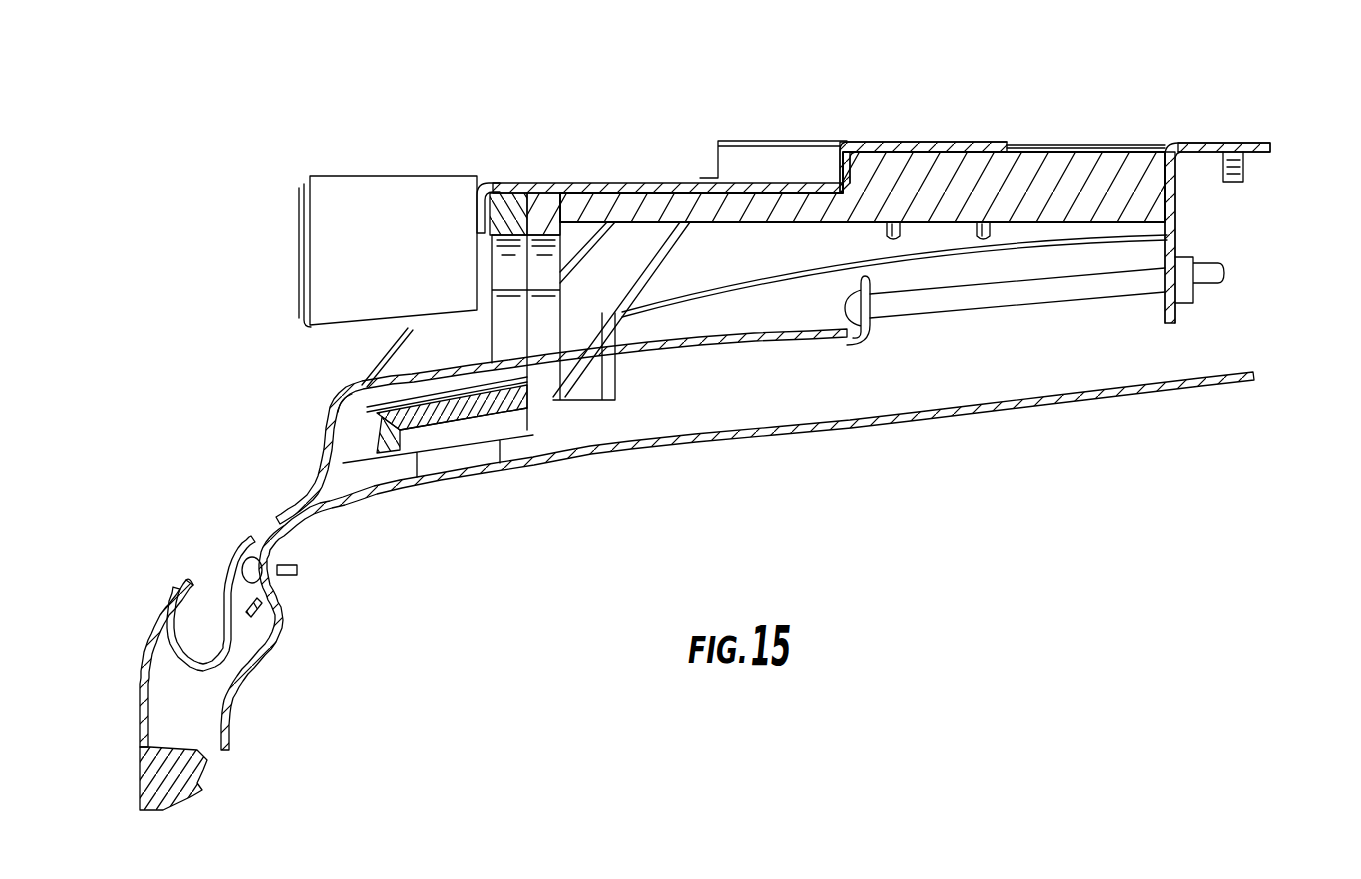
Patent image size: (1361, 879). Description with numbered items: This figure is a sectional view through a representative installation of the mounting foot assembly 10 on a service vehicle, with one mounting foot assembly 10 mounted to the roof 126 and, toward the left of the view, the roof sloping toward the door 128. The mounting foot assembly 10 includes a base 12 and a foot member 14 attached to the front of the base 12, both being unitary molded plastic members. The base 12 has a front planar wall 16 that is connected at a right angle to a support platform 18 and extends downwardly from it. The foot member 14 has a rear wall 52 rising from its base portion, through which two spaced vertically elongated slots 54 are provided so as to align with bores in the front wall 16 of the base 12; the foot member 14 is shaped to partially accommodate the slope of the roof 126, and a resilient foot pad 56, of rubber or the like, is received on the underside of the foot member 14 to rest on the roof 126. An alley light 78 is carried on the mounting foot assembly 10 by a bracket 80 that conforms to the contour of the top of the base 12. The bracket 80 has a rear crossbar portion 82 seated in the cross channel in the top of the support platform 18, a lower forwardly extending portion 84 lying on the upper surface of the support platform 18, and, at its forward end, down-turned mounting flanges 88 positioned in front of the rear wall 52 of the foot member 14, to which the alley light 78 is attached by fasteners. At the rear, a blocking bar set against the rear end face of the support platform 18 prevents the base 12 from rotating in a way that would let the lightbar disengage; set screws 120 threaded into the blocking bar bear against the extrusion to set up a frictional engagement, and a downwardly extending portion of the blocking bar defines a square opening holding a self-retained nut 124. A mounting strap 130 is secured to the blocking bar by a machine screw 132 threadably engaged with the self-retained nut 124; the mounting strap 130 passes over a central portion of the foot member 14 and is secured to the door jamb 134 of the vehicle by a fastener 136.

The mounting foot assembly 10 is at (785, 107).
The base 12 is at (1086, 106).
The foot member 14 is at (519, 453).
The front planar wall 16 is at (860, 321).
The support platform 18 is at (862, 174).
The rear wall 52 is at (506, 146).
The vertically elongated slots 54 is at (302, 431).
The foot pad 56 is at (455, 487).
The alley light 78 is at (388, 249).
The bracket 80 is at (553, 259).
The rear crossbar portion 82 is at (923, 130).
The lower forwardly extending portion 84 is at (668, 151).
The mounting flanges 88 is at (478, 163).
The set screws 120 is at (1247, 233).
The self-retained nut 124 is at (1243, 267).
The roof 126 is at (737, 561).
The door 128 is at (178, 648).
The mounting strap 130 is at (573, 400).
The machine screw 132 is at (1017, 326).
The door jamb 134 is at (267, 603).
The stud 136 is at (309, 575).